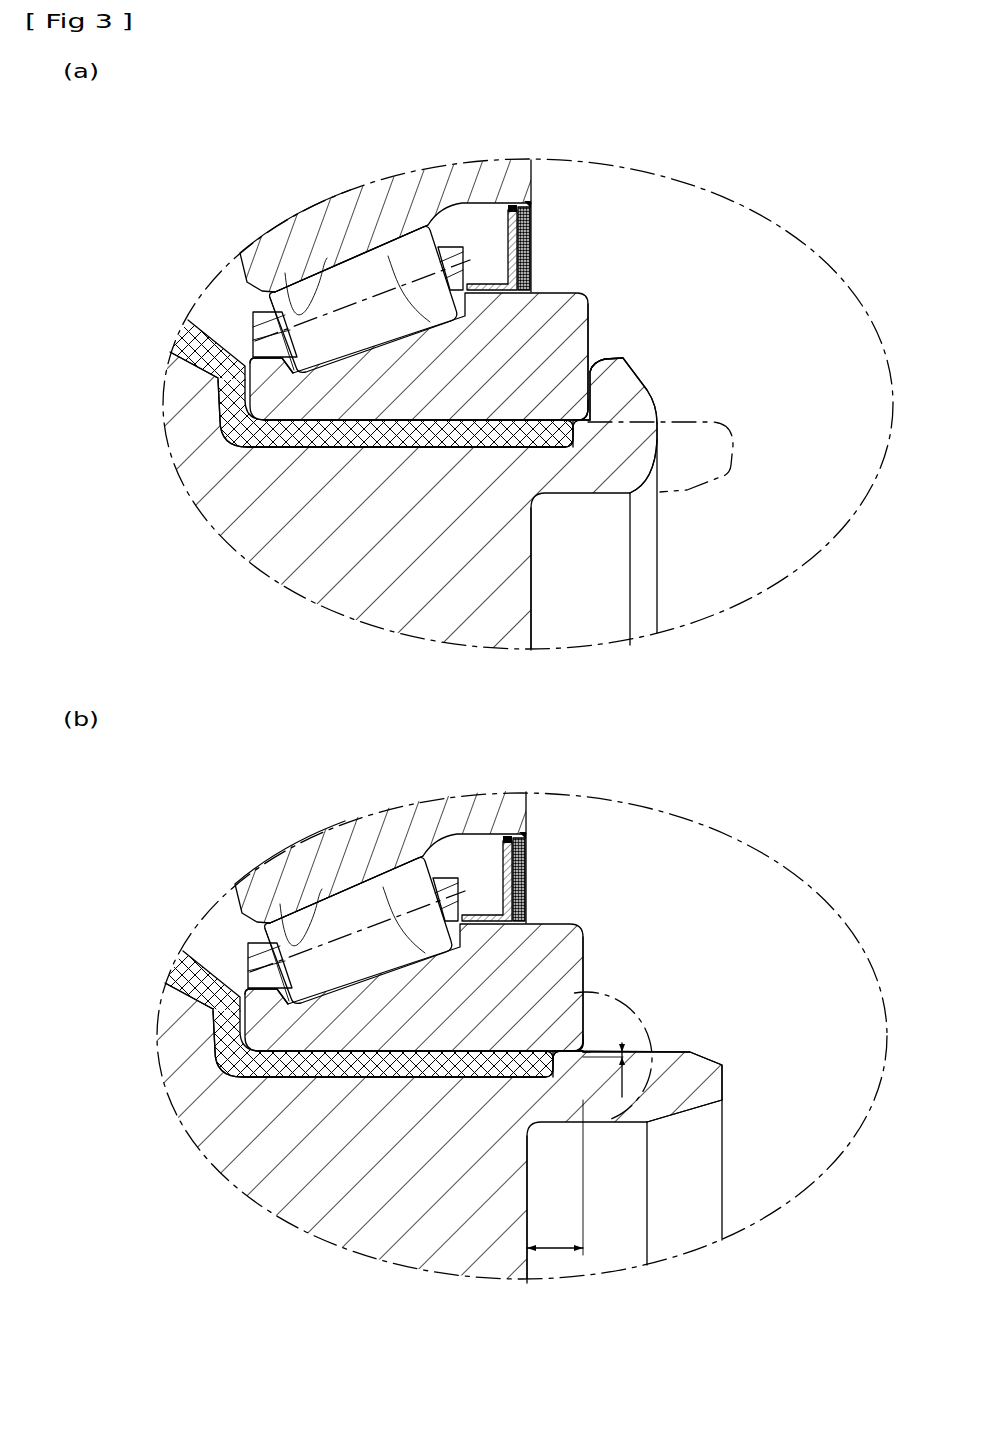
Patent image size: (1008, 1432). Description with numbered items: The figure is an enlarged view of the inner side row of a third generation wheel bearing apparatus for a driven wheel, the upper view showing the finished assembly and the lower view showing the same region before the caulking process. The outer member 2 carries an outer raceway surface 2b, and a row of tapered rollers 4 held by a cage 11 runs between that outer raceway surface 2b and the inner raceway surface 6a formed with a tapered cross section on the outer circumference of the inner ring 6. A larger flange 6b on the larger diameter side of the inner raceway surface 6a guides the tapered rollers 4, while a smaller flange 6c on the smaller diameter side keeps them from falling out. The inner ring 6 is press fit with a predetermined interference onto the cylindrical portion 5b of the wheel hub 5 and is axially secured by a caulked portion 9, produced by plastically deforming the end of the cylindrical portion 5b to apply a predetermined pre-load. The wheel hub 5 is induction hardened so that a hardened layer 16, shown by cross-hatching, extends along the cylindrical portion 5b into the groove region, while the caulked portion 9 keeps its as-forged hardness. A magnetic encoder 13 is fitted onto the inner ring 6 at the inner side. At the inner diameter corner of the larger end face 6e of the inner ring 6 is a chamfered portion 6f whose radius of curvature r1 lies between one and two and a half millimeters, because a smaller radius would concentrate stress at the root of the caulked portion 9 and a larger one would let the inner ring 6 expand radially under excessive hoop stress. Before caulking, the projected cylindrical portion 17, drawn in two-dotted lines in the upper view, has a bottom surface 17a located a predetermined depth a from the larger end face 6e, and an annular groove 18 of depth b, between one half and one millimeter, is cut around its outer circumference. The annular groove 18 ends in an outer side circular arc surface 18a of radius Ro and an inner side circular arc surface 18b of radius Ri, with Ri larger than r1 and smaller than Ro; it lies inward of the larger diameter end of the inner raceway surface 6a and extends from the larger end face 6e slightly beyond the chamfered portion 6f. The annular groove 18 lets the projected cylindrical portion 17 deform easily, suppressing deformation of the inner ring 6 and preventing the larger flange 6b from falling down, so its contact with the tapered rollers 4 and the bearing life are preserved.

The outer member 2 is at (447, 180).
The outer raceway surface 2b is at (290, 286).
The tapered rollers 4 is at (377, 273).
The wheel hub 5 is at (262, 537).
The cylindrical portion 5b is at (424, 447).
The inner ring 6 is at (517, 337).
The inner raceway surface 6a is at (325, 362).
The larger flange 6b is at (467, 280).
The smaller flange 6c is at (170, 360).
The larger end face 6e is at (588, 320).
The chamfered portion 6f is at (590, 364).
The caulked portion 9 is at (622, 397).
The cage 11 is at (245, 307).
The magnetic encoder 13 is at (532, 243).
The hardened layer 16 is at (235, 442).
The projected cylindrical portion 17 is at (687, 460).
The bottom surface 17a is at (533, 597).
The annular groove 18 is at (572, 407).
The outer side circular arc surface 18a is at (558, 1050).
The inner side circular arc surface 18b is at (567, 1060).
The radius of curvature of chamfered portion r1 is at (583, 413).
The radius of curvature of outer side circular arc surface Ro is at (577, 1049).
The radius of curvature of inner side circular arc surface Ri is at (586, 1056).
The depth a is at (555, 1177).
The depth of annular groove b is at (629, 1072).